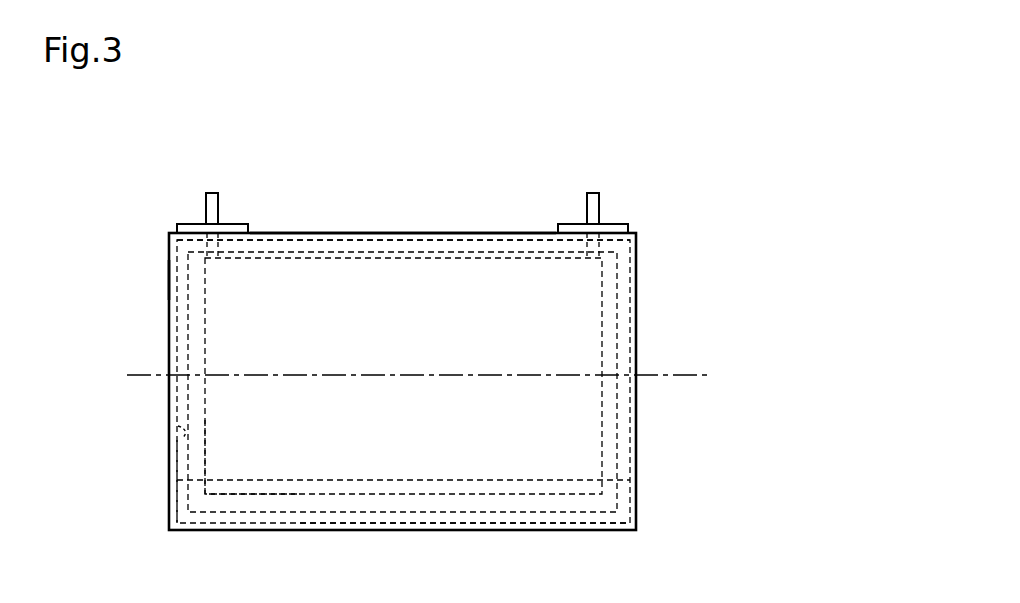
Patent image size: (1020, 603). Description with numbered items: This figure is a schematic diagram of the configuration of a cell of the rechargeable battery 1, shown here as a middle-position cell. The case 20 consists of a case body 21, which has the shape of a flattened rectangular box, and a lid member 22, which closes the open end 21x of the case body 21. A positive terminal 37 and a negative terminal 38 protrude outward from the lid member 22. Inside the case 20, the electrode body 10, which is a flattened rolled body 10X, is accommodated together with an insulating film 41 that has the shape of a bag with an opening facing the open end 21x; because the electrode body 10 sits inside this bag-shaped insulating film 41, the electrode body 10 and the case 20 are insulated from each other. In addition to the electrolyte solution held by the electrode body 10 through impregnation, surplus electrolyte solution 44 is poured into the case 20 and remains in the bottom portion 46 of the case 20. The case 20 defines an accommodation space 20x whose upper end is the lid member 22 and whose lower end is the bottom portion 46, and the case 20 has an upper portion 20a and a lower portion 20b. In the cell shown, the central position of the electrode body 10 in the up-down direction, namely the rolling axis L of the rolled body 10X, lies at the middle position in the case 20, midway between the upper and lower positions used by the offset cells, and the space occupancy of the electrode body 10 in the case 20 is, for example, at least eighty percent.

The rechargeable battery 1 is at (648, 117).
The electrode body 10 is at (602, 435).
The rolled body 10X is at (252, 457).
The case 20 is at (637, 232).
The upper portion of the case 20a is at (176, 330).
The lower portion of the case 20b is at (170, 462).
The accommodation space 20x is at (176, 426).
The case body 21 is at (168, 283).
The open end 21x is at (296, 240).
The lid member 22 is at (403, 232).
The positive terminal 37 is at (212, 193).
The negative terminal 38 is at (593, 193).
The insulating film 41 is at (618, 287).
The surplus electrolyte solution 44 is at (355, 480).
The bottom portion 46 is at (436, 517).
The rolling axis L is at (686, 375).